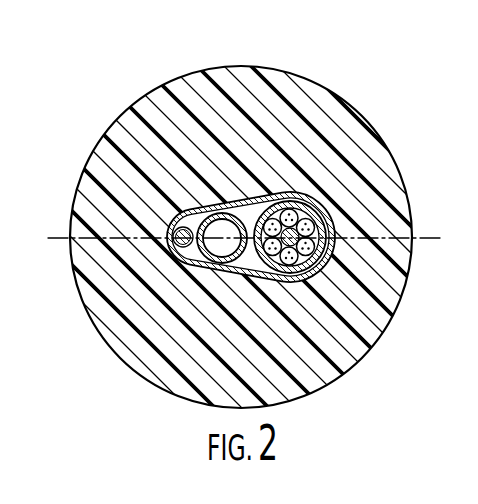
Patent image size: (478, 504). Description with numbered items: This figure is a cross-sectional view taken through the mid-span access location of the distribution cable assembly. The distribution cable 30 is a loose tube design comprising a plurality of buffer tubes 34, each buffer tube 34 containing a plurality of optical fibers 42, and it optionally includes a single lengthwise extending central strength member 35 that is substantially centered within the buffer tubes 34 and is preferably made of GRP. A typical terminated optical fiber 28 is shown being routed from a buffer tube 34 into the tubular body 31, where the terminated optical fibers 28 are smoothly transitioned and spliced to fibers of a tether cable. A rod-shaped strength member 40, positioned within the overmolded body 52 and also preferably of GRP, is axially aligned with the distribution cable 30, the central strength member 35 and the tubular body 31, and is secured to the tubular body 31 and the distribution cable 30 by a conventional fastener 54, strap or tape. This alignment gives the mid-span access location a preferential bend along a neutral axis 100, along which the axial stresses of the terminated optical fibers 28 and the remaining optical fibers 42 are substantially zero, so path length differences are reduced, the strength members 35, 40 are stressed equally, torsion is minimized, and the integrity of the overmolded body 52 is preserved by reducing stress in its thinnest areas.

The neutral axis 100 is at (69, 262).
The overmolded body 52 is at (150, 118).
The fastener 54 is at (203, 268).
The strength member 40 is at (176, 248).
The tubular body 31 is at (204, 207).
The terminated optical fiber 28 is at (230, 262).
The buffer tube 34 is at (275, 198).
The optical fibers 42 is at (299, 197).
The distribution cable 30 is at (316, 208).
The central strength member 35 is at (310, 221).